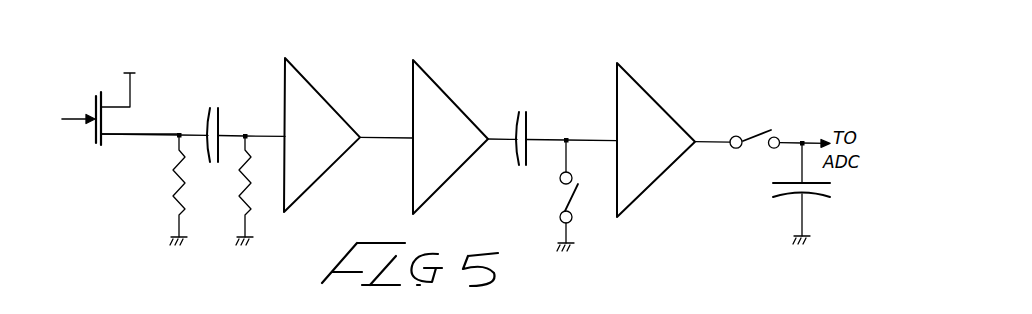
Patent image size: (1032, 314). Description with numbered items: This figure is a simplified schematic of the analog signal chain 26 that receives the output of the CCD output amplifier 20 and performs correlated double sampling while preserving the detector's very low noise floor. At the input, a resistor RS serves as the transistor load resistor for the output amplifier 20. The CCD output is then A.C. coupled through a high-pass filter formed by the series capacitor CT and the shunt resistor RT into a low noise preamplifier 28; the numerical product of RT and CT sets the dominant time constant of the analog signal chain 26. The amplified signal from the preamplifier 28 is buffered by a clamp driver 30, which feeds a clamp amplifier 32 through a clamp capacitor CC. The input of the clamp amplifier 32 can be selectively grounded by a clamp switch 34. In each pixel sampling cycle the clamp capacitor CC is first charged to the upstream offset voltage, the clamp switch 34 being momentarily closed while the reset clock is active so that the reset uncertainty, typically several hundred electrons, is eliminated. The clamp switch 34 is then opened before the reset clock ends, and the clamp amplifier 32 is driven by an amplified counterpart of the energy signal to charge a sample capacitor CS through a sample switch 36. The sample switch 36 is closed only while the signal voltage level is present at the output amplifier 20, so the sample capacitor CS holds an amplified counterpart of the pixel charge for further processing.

The output amplifier 20 is at (106, 97).
The analog signal chain 26 is at (311, 202).
The low noise preamplifier 28 is at (305, 76).
The clamp driver 30 is at (413, 185).
The clamp amplifier 32 is at (650, 86).
The clamp switch 34 is at (562, 210).
The sample switch 36 is at (752, 148).
The resistor RS is at (162, 190).
The resistor RT is at (232, 190).
The capacitor CT is at (216, 118).
The clamp capacitor CC is at (520, 121).
The sample capacitor CS is at (784, 193).